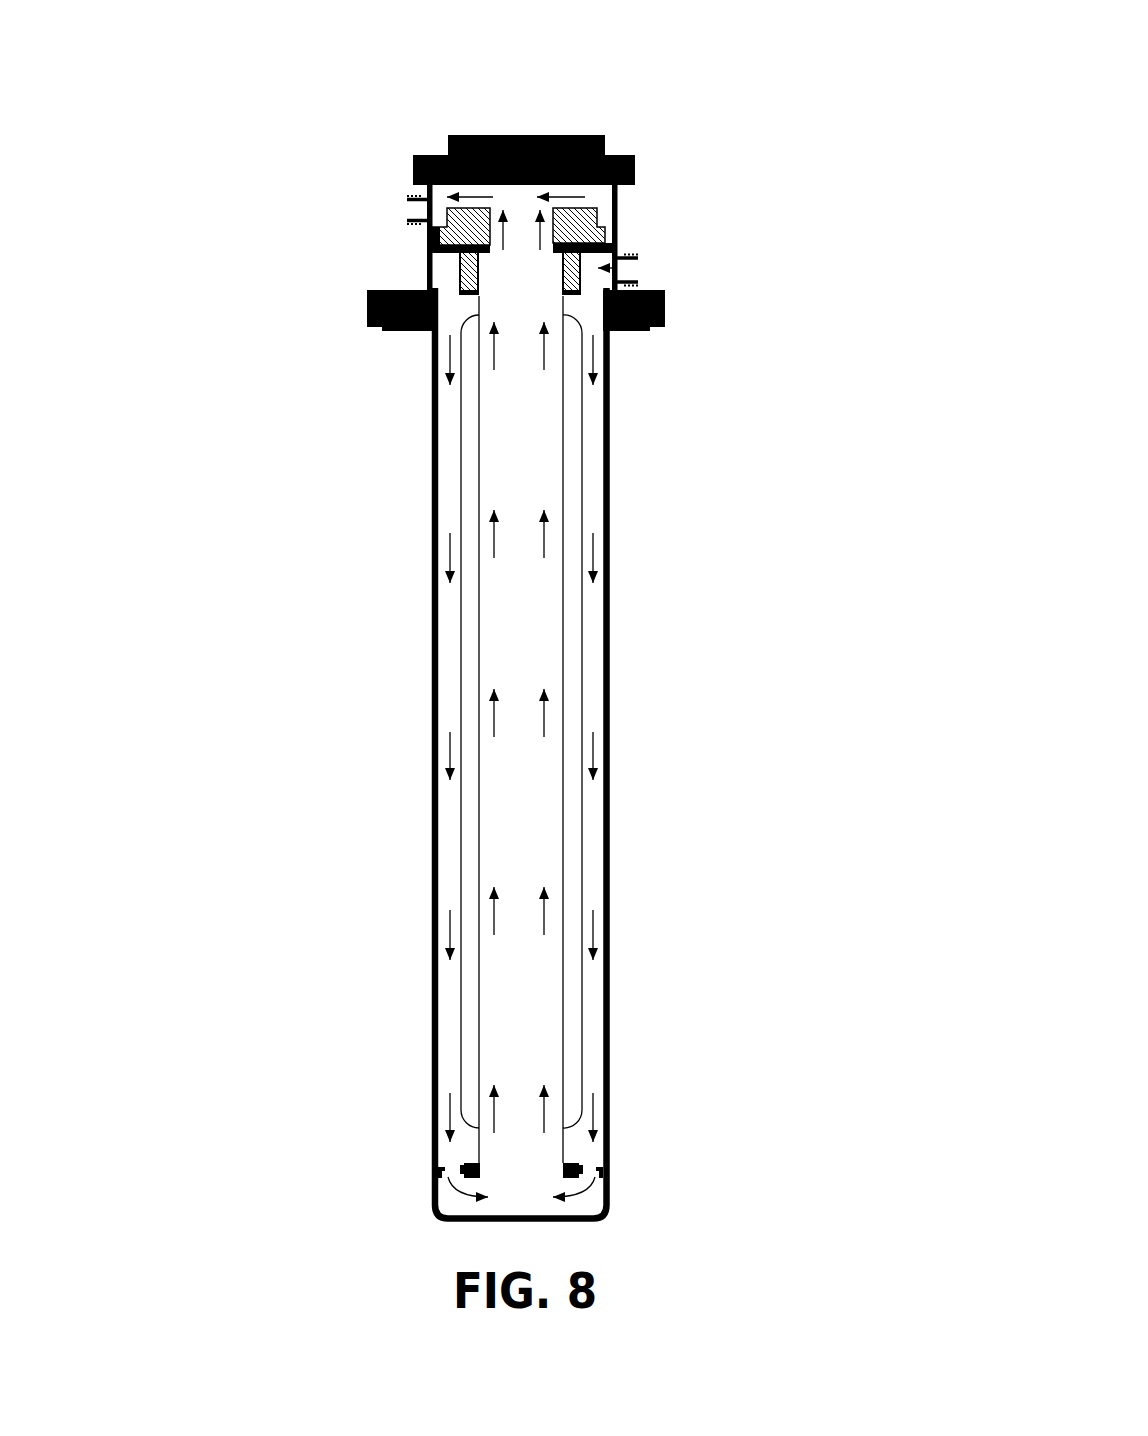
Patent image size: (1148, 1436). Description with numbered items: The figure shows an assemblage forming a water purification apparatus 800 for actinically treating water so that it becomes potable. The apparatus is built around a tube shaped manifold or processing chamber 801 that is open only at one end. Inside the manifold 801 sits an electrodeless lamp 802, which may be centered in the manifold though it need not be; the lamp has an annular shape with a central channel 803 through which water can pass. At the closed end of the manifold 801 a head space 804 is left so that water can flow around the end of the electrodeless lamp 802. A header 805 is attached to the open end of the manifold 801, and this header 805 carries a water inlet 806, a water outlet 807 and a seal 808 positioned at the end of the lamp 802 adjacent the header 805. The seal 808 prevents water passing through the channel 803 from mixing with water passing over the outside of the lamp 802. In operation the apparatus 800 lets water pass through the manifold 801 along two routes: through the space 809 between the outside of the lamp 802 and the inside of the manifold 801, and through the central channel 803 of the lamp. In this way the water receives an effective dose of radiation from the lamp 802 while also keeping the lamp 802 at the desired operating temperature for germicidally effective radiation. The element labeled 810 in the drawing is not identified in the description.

The water purification apparatus 800 is at (716, 115).
The manifold 801 is at (431, 413).
The electrodeless lamp 802 is at (574, 529).
The central channel 803 is at (564, 613).
The head space 804 is at (583, 1197).
The header 805 is at (495, 135).
The water inlet 806 is at (634, 270).
The water outlet 807 is at (407, 213).
The seal 808 is at (467, 227).
The space 809 is at (455, 520).
The bottom retainer seal 810 is at (462, 1167).